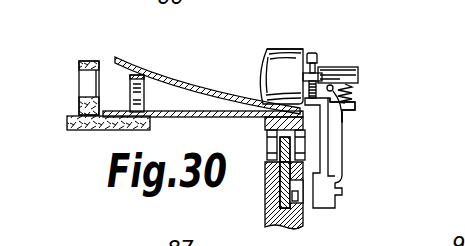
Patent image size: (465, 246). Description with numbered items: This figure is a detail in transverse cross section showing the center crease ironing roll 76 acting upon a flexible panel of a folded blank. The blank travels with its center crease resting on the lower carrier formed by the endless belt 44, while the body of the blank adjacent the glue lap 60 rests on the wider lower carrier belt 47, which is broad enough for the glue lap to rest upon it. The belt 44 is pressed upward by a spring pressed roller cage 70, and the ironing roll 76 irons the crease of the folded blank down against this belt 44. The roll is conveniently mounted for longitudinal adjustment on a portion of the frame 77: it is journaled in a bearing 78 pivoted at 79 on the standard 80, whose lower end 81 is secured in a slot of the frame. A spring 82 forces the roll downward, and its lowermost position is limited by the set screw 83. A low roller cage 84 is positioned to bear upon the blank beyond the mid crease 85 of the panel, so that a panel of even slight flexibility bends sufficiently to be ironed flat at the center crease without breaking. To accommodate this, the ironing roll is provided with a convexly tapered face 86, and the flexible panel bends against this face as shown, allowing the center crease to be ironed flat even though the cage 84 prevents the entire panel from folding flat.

The glue lap 60 is at (76, 114).
The endless belt 47 is at (88, 131).
The roller cage 84 is at (145, 98).
The mid crease 85 is at (200, 85).
The convexly tapered face 86 is at (273, 51).
The ironing roll 76 is at (296, 50).
The set screw 83 is at (318, 54).
The bearing 78 is at (340, 67).
The spring 82 is at (355, 97).
The standard 80 is at (340, 148).
The pivot 79 is at (343, 123).
The endless belt 44 is at (266, 122).
The roller cage 70 is at (266, 150).
The lower end 81 is at (292, 192).
The frame 77 is at (303, 218).